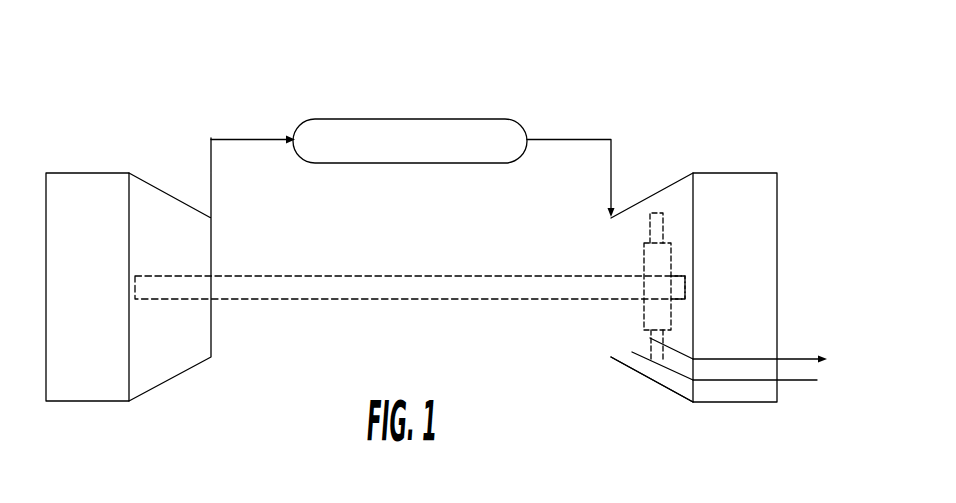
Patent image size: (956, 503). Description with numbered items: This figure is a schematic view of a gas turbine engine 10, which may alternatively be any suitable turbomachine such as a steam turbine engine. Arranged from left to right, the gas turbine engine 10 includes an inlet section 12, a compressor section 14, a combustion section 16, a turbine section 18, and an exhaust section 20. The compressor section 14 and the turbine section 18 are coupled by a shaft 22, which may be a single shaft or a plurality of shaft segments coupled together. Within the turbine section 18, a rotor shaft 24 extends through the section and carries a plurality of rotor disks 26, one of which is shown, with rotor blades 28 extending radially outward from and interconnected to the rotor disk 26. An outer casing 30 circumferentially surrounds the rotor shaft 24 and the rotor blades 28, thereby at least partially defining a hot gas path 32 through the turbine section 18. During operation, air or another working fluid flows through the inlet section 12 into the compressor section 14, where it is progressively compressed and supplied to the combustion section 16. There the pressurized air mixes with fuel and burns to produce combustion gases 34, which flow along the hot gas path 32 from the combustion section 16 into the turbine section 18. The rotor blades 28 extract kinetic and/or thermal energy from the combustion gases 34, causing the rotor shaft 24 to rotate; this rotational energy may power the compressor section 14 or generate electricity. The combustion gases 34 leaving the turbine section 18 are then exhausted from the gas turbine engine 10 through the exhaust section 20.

The gas turbine engine 10 is at (256, 56).
The inlet section 12 is at (62, 172).
The compressor section 14 is at (154, 185).
The combustion section 16 is at (465, 119).
The turbine section 18 is at (678, 172).
The exhaust section 20 is at (752, 172).
The shaft 22 is at (370, 300).
The rotor shaft 24 is at (683, 272).
The rotor disk 26 is at (643, 263).
The rotor blade 28 is at (650, 222).
The outer casing 30 is at (670, 392).
The hot gas path 32 is at (657, 363).
The combustion gases 34 is at (595, 140).